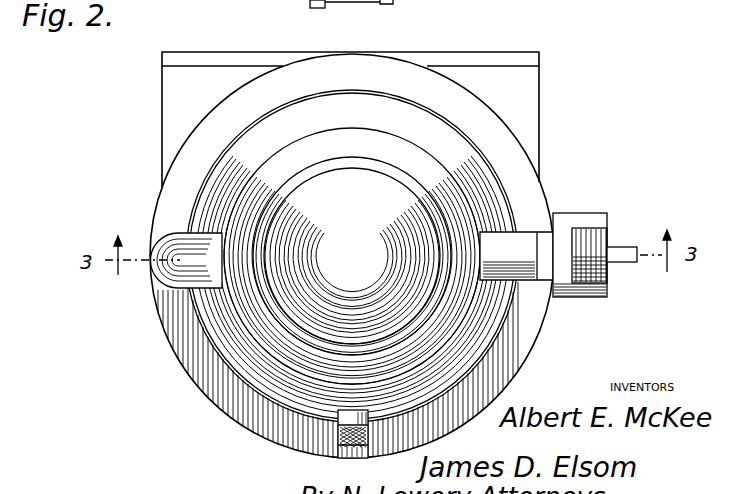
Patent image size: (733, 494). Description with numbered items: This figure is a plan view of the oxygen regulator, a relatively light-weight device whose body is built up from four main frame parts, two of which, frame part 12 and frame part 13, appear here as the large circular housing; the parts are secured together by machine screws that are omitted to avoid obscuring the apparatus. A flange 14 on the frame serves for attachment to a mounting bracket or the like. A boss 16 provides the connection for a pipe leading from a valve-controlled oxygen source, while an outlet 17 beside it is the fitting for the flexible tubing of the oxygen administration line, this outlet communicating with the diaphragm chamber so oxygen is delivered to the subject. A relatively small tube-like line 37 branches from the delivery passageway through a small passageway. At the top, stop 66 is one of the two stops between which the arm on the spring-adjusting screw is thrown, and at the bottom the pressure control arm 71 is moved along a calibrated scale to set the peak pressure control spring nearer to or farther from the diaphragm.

The frame part 12 is at (457, 187).
The frame part 13 is at (352, 253).
The flange 14 is at (552, 32).
The boss 16 is at (585, 238).
The outlet 17 is at (588, 222).
The line 37 is at (627, 263).
The stop 66 is at (393, 4).
The pressure control arm 71 is at (335, 445).